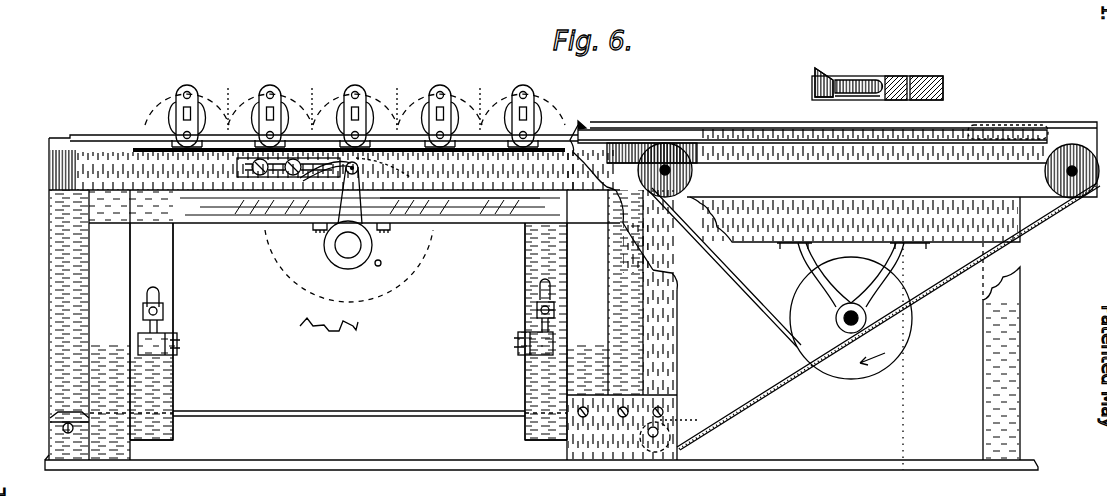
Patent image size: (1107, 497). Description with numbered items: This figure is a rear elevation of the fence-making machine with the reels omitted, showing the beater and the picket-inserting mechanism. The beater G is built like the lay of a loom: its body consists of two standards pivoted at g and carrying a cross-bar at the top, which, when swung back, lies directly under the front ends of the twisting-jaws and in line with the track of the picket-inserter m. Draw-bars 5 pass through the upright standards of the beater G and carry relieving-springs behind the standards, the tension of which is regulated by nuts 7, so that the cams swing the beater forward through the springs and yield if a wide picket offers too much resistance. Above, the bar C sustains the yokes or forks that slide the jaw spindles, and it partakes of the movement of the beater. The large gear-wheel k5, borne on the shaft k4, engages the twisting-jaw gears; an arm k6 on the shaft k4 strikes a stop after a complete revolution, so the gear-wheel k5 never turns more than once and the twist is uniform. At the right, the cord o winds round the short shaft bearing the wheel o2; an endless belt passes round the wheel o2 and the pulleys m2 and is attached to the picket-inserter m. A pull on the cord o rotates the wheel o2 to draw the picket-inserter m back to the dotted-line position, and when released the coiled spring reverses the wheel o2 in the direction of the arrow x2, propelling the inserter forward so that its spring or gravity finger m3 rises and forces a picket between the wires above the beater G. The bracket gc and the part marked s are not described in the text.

The bar C is at (135, 155).
The beater G is at (348, 319).
The pivot of beater standards g is at (525, 410).
The bracket gc is at (178, 344).
The stud bolt s is at (160, 309).
The nuts 7 is at (164, 315).
The draw-bars 5 is at (537, 312).
The shaft k4 is at (351, 245).
The large gear-wheel k5 is at (349, 280).
The arm k6 is at (350, 193).
The picket-inserter m is at (1030, 110).
The pulleys m2 is at (853, 170).
The spring or gravity finger m3 is at (581, 125).
The cord o is at (888, 316).
The wheel o2 is at (851, 318).
The arrow x2 is at (836, 276).